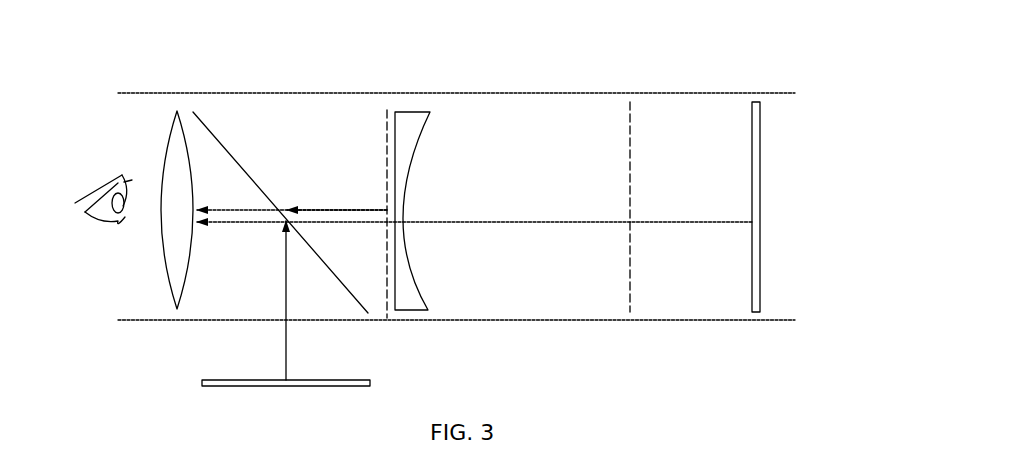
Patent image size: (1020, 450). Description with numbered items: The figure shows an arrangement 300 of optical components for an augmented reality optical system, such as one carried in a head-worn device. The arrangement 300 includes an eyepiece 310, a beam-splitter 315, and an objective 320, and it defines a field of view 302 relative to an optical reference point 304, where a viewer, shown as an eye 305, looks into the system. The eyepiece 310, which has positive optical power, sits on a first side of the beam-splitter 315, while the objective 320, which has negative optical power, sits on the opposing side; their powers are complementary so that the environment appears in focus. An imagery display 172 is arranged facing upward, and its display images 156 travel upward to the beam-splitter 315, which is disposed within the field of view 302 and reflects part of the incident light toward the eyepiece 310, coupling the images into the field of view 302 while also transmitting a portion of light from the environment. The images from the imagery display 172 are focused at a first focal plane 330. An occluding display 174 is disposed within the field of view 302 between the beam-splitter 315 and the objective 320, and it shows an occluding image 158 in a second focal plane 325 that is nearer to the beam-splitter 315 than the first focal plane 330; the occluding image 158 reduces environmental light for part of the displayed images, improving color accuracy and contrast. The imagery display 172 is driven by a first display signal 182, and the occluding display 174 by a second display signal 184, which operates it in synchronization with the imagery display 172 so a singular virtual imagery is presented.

The arrangement 300 is at (785, 58).
The field of view 302 is at (785, 197).
The optical reference point 304 is at (129, 201).
The eye 305 is at (88, 227).
The eyepiece 310 is at (168, 129).
The beam-splitter 315 is at (214, 133).
The occluding image 158 is at (338, 210).
The display images 156 is at (285, 335).
The imagery display 172 is at (302, 380).
The first display signal 182 is at (372, 383).
The second display signal 184 is at (387, 321).
The occluding display 174 is at (386, 133).
The objective 320 is at (410, 112).
The second focal plane 325 is at (630, 131).
The first focal plane 330 is at (752, 129).